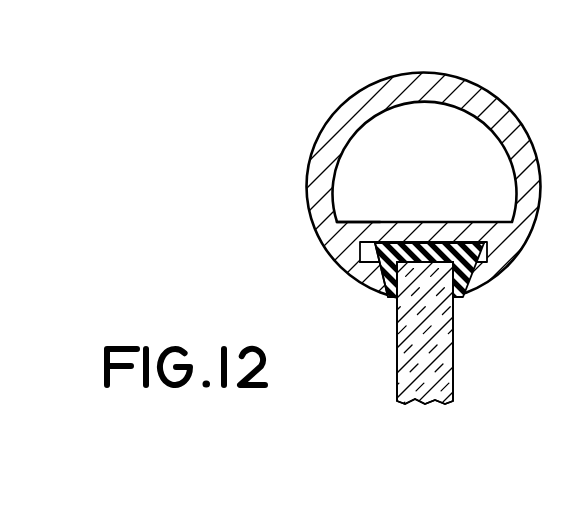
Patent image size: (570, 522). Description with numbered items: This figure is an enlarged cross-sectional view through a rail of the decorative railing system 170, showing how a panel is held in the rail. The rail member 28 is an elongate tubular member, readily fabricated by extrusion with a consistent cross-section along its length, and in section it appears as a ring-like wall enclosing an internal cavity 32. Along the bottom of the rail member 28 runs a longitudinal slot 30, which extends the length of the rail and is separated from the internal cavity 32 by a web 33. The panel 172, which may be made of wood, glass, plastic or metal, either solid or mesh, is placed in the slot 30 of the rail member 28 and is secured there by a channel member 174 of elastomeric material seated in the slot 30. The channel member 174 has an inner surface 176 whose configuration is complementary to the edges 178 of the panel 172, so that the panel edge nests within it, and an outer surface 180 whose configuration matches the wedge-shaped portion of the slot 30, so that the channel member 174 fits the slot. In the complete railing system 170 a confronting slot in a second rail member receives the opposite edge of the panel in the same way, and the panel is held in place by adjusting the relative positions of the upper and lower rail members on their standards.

The rail member 28 is at (466, 77).
The longitudinal slot 30 is at (484, 252).
The internal cavity 32 is at (440, 138).
The web 33 is at (357, 222).
The decorative railing system 170 is at (373, 84).
The panel 172 is at (455, 355).
The channel member 174 is at (365, 248).
The inner surface 176 is at (386, 298).
The edge 178 is at (423, 241).
The outer surface 180 is at (385, 282).